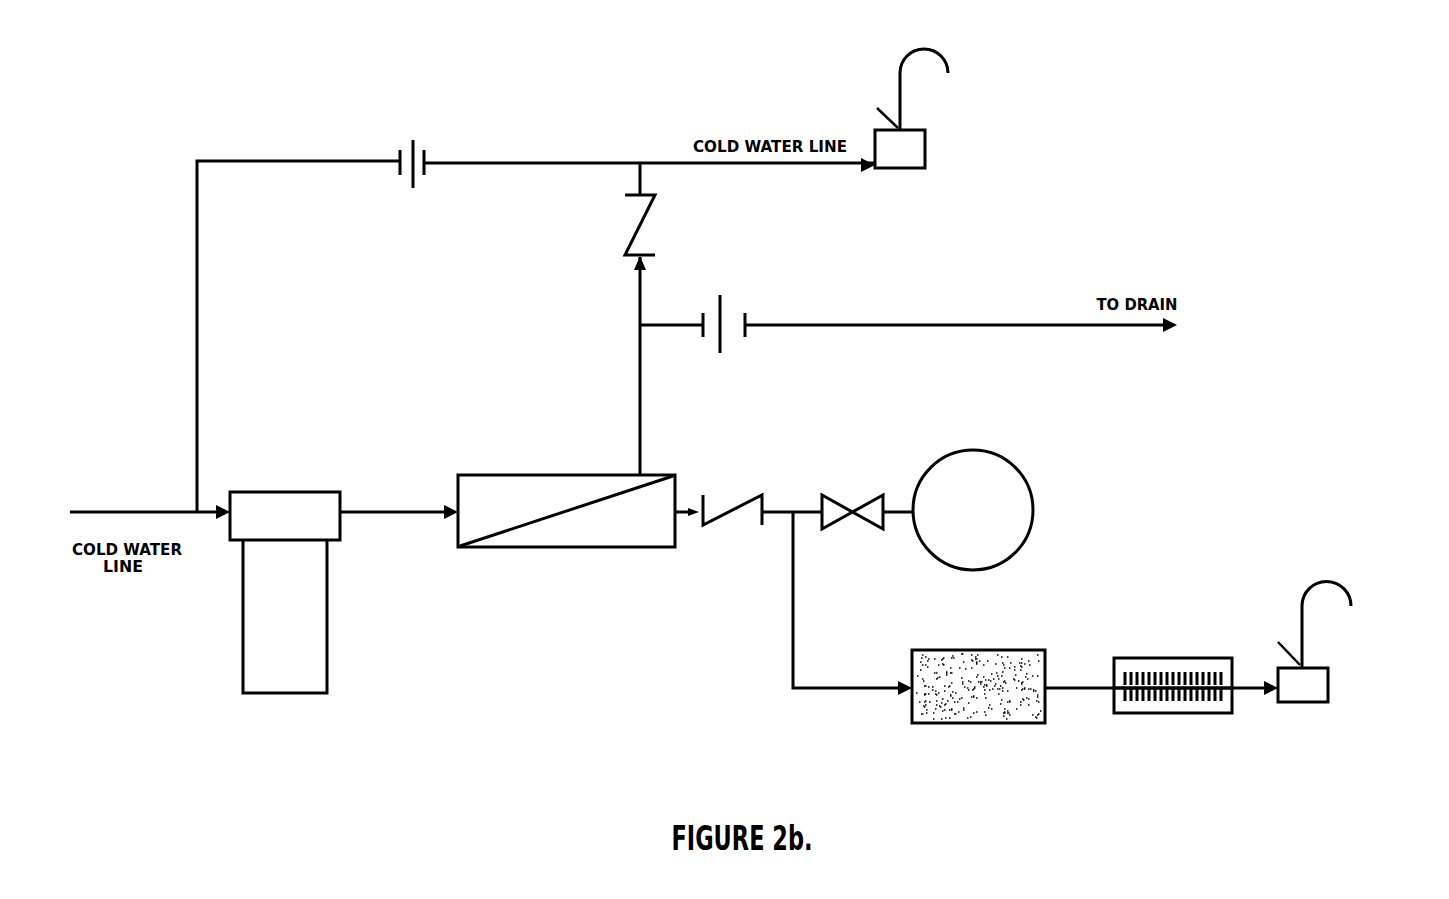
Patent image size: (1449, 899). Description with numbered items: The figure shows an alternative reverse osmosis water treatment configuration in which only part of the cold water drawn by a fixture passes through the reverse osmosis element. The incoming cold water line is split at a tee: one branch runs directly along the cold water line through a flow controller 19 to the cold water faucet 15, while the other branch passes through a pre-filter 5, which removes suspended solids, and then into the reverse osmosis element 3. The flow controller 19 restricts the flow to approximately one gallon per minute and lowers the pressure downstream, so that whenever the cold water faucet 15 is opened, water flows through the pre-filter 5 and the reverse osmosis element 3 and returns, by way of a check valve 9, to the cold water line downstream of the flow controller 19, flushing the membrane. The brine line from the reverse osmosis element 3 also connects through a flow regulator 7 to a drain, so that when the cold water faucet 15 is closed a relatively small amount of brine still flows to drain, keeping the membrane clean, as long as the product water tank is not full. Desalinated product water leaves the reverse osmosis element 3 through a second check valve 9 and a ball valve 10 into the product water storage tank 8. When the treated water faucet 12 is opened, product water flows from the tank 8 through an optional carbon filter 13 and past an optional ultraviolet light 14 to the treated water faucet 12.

The reverse osmosis element 3 is at (455, 540).
The pre-filter 5 is at (330, 633).
The flow regulator 7 is at (722, 293).
The product water storage tank 8 is at (962, 449).
The check valve 9 is at (625, 250).
The ball valve 10 is at (873, 492).
The treated water faucet 12 is at (1329, 668).
The carbon filter 13 is at (944, 649).
The ultraviolet light 14 is at (1187, 658).
The cold water faucet 15 is at (925, 131).
The flow controller 19 is at (402, 157).